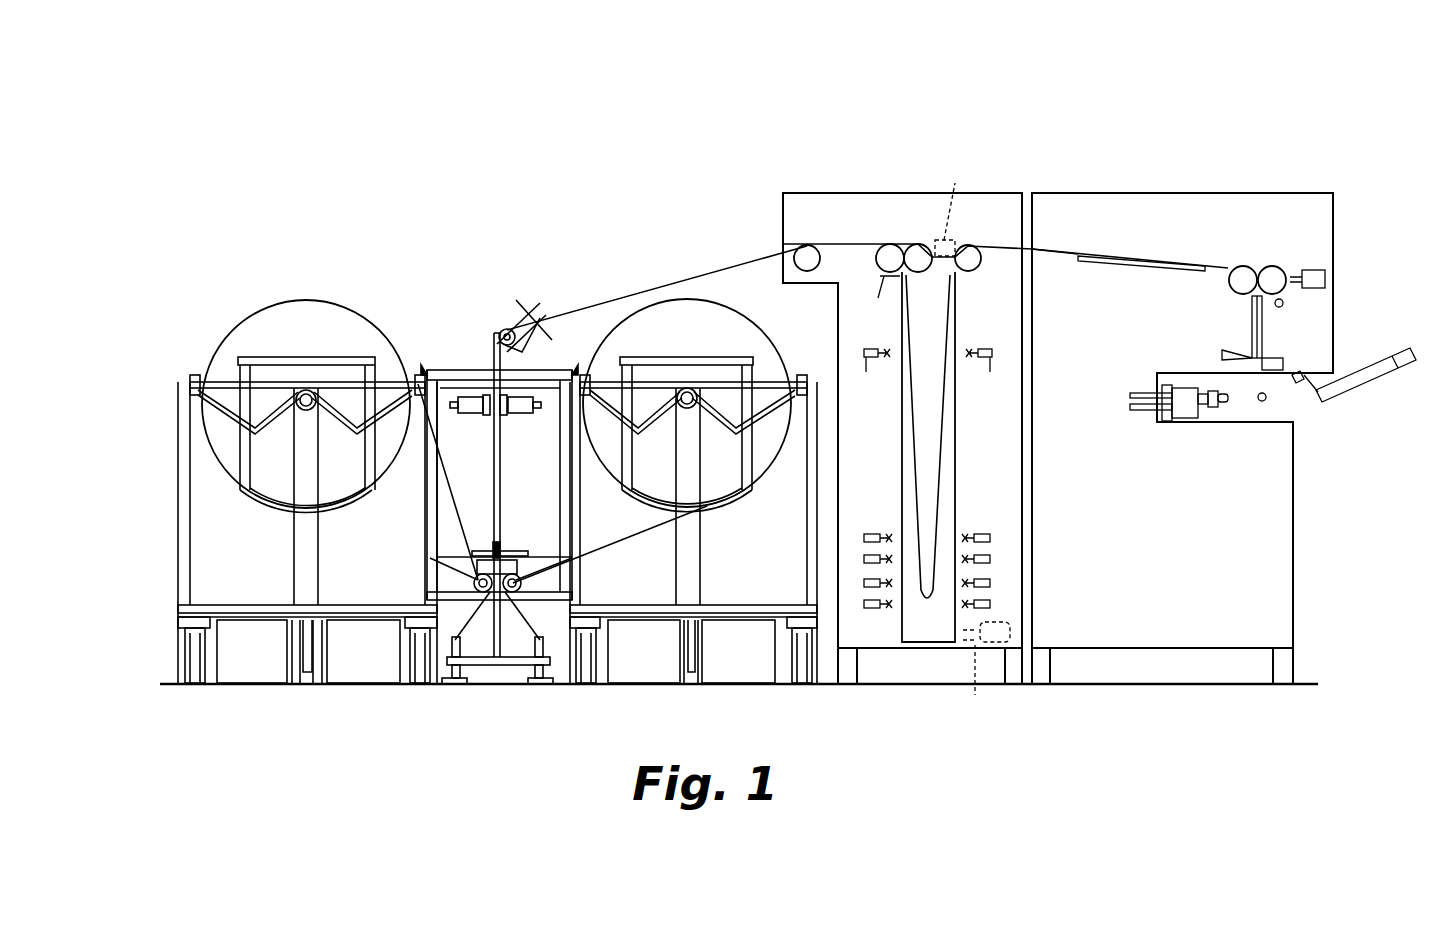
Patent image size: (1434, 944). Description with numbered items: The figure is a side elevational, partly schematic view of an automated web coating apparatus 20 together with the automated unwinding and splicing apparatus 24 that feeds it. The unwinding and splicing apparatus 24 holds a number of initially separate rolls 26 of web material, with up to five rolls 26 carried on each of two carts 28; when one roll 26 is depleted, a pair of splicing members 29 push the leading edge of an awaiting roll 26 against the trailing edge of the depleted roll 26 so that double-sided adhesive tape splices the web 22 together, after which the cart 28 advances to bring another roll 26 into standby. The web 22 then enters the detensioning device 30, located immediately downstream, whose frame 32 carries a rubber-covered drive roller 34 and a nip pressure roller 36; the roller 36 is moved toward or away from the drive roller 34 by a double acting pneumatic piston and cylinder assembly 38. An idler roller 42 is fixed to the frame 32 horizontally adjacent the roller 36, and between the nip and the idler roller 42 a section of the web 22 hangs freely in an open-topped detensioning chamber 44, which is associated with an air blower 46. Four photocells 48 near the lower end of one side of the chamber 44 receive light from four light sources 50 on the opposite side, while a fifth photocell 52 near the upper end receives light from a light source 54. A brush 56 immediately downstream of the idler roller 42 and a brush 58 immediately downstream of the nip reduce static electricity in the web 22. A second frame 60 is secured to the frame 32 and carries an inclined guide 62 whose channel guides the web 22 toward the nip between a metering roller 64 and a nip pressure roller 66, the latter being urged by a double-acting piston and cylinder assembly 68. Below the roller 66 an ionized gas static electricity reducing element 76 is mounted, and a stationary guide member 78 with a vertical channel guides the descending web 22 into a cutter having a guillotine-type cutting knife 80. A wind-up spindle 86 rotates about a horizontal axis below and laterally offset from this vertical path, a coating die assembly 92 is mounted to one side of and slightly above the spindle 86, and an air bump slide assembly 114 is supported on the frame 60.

The automated web coating apparatus 20 is at (1298, 150).
The web 22 is at (711, 267).
The automated unwinding and splicing apparatus 24 is at (442, 260).
The rolls 26 is at (281, 321).
The carts 28 is at (170, 496).
The splicing members 29 is at (470, 418).
The detensioning device 30 is at (893, 150).
The frame 32 is at (906, 650).
The drive roller 34 is at (862, 256).
The nip pressure roller 36 is at (920, 243).
The double acting pneumatic piston and cylinder assembly 38 is at (954, 204).
The idler roller 42 is at (978, 270).
The detensioning chamber 44 is at (958, 446).
The air blower 46 is at (984, 674).
The photocells 48 is at (866, 557).
The light sources 50 is at (990, 559).
The fifth photocell 52 is at (868, 379).
The light source 54 is at (984, 381).
The brush 56 is at (1028, 246).
The brush 58 is at (879, 306).
The second frame 60 is at (1257, 193).
The inclined guide 62 is at (1130, 270).
The metering roller 64 is at (1232, 288).
The nip pressure roller 66 is at (1266, 266).
The double-acting piston and cylinder assembly 68 is at (1316, 268).
The ionized gas static electricity reducing element 76 is at (1284, 303).
The stationary guide member 78 is at (1264, 322).
The guillotine-type cutting knife 80 is at (1222, 352).
The wind-up spindle 86 is at (1270, 400).
The coating die assembly 92 is at (1334, 350).
The air bump slide assembly 114 is at (1144, 376).